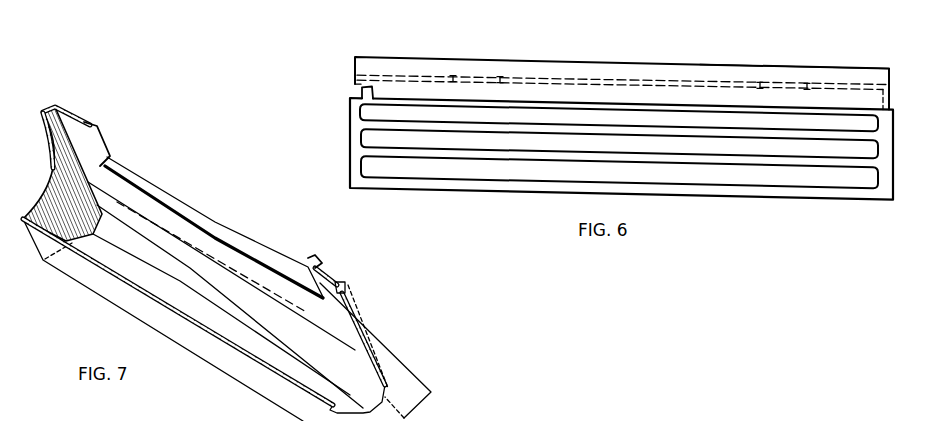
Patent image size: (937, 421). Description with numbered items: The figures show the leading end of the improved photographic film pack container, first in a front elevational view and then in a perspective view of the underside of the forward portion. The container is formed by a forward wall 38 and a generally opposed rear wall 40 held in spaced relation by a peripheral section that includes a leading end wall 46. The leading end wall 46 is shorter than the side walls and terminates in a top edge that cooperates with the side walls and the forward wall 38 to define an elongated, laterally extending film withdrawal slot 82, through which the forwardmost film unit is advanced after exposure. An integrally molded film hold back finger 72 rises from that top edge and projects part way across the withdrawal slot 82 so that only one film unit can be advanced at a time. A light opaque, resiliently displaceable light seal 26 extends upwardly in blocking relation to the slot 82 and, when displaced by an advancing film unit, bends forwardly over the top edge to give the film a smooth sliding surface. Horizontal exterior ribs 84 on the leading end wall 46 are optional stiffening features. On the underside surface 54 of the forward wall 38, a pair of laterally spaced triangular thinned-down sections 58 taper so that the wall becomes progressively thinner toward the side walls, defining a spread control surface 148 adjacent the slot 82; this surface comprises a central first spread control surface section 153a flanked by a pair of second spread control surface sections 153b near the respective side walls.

In FIG. 6, the light seal 26 is at (385, 68).
In FIG. 7, the light seal 26 is at (417, 390).
In FIG. 6, the forward wall 38 is at (782, 86).
In FIG. 7, the forward wall 38 is at (70, 115).
In FIG. 7, the rear wall 40 is at (92, 278).
In FIG. 6, the leading end wall 46 is at (349, 120).
In FIG. 7, the leading end wall 46 is at (62, 272).
In FIG. 7, the underside surface 54 is at (85, 148).
In FIG. 7, the triangular thinned-down sections 58 is at (97, 210).
In FIG. 6, the film hold back finger 72 is at (356, 87).
In FIG. 6, the film withdrawal slot 82 is at (850, 103).
In FIG. 7, the film withdrawal slot 82 is at (230, 295).
In FIG. 6, the horizontal exterior ribs 84 is at (462, 153).
In FIG. 7, the spread control surface 148 is at (230, 277).
In FIG. 6, the first spread control surface section 153a is at (578, 78).
In FIG. 6, the second spread control surface sections 153b is at (412, 78).